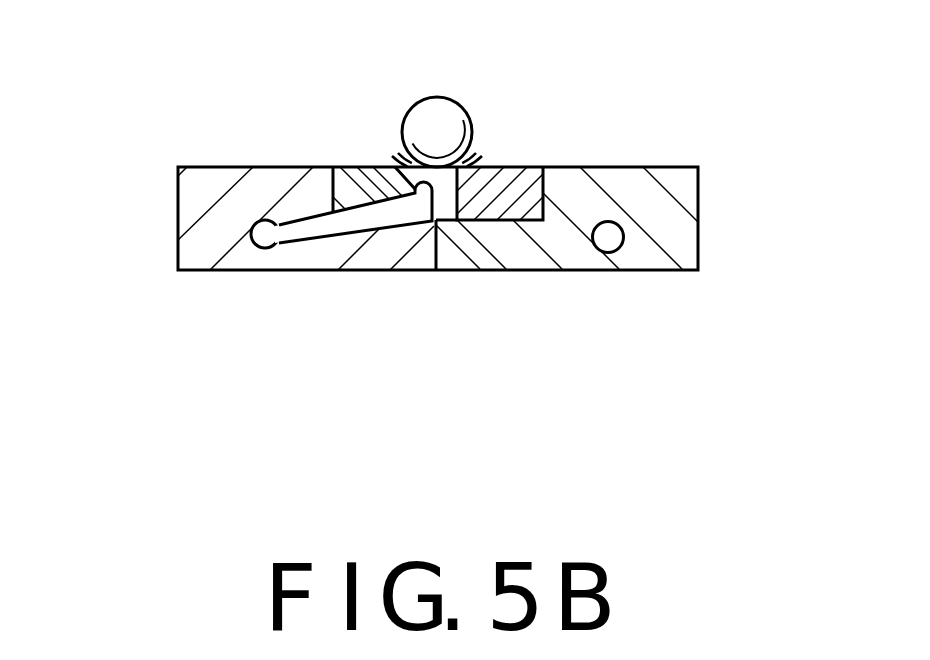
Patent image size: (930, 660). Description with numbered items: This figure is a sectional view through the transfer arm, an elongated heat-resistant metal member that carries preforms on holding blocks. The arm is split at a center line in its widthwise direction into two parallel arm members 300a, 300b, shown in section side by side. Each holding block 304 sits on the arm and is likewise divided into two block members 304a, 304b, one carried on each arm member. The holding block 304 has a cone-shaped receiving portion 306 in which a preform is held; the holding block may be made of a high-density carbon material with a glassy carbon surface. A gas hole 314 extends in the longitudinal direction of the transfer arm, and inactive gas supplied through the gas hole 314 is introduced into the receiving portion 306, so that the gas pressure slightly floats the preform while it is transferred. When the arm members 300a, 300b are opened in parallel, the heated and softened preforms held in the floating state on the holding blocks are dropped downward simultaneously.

The arm member 300a is at (222, 235).
The arm member 300b is at (672, 210).
The holding block 304 is at (416, 112).
The block member 304a is at (360, 164).
The block member 304b is at (518, 165).
The receiving portion 306 is at (430, 184).
The gas hole 314 is at (268, 244).